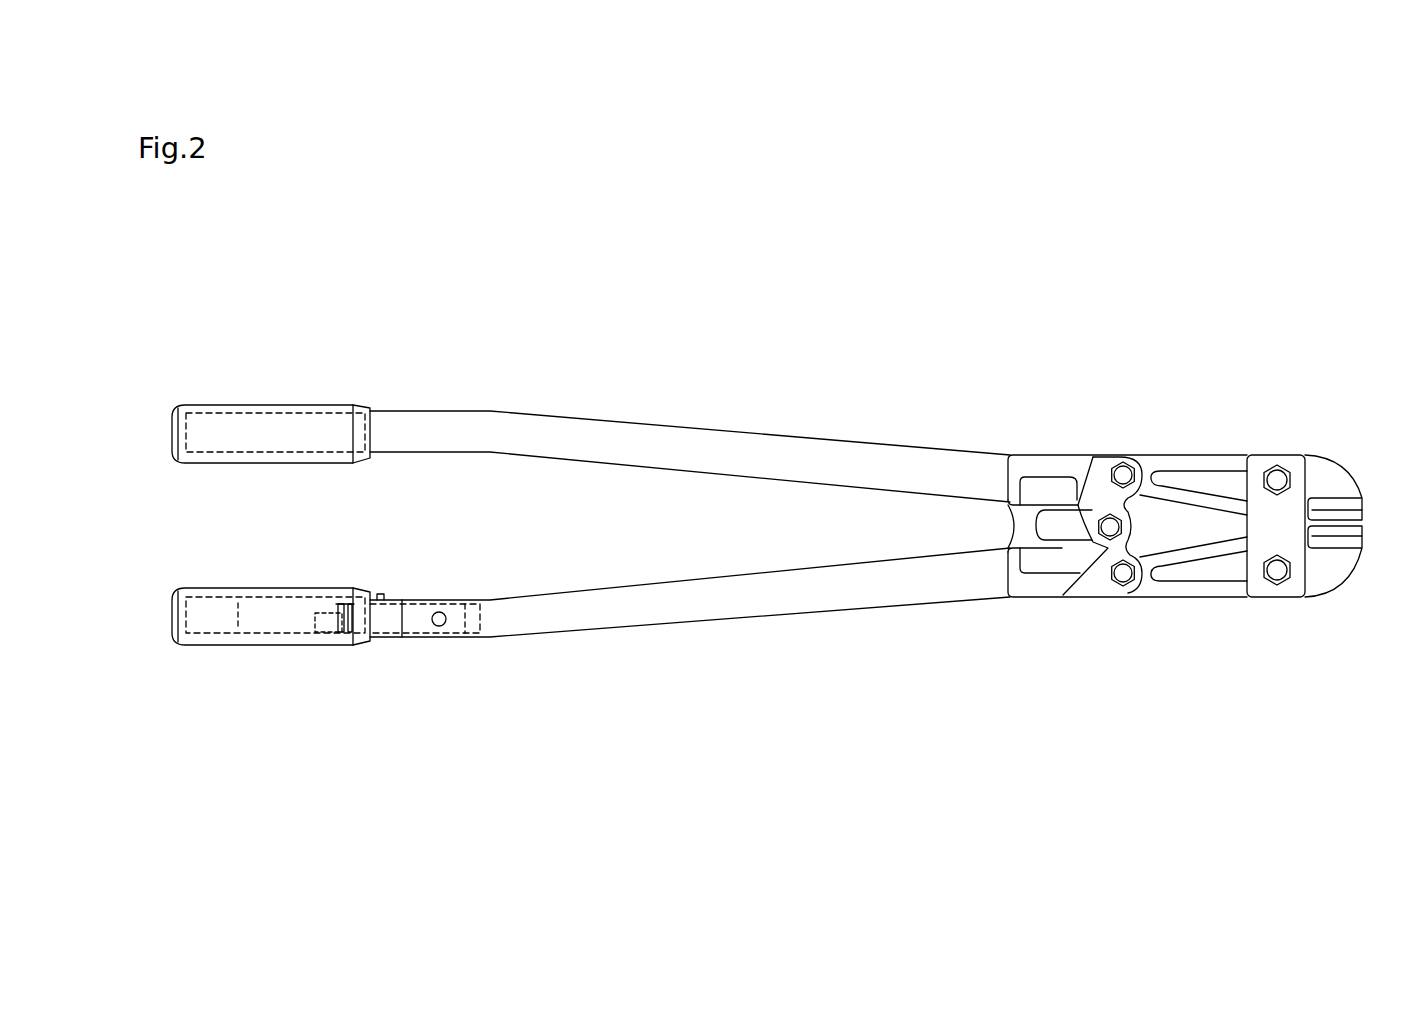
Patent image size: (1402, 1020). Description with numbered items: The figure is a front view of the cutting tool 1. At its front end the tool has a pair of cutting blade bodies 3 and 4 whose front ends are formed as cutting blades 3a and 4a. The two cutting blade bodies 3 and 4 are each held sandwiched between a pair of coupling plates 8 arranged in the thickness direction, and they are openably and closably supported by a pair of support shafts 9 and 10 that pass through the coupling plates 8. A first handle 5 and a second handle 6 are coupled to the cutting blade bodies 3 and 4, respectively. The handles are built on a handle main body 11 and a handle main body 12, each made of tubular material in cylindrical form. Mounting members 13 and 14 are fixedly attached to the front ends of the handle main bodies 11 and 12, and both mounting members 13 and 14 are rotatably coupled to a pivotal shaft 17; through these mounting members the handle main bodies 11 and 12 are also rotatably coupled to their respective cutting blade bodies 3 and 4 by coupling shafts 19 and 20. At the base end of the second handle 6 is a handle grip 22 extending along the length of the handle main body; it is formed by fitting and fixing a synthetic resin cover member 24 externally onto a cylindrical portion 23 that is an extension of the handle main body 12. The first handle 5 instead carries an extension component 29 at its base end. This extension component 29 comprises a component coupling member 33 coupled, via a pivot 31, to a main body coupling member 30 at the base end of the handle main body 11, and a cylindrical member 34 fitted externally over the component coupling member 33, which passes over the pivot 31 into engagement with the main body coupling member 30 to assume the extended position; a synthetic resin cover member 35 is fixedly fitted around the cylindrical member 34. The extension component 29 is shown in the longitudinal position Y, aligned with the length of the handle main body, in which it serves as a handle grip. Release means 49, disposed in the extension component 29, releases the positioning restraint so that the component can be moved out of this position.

The cutting tool 1 is at (832, 365).
The cutting blade body 3 is at (1224, 597).
The cutting blade 3a is at (1338, 545).
The cutting blade body 4 is at (1227, 455).
The cutting blade 4a is at (1338, 518).
The first handle 5 is at (684, 652).
The second handle 6 is at (681, 402).
The coupling plate 8 is at (1292, 510).
The support shaft 9 is at (1278, 580).
The support shaft 10 is at (1278, 470).
The handle main body 11 is at (612, 617).
The handle main body 12 is at (568, 425).
The mounting member 13 is at (1042, 588).
The mounting member 14 is at (1028, 465).
The pivotal shaft 17 is at (1106, 516).
The coupling shaft 19 is at (1122, 586).
The coupling shaft 20 is at (1122, 462).
The handle grip 22 is at (290, 393).
The cylindrical portion 23 is at (333, 407).
The cover member 24 is at (232, 403).
The extension component 29 is at (351, 579).
The main body coupling member 30 is at (385, 638).
The pivot 31 is at (337, 622).
The component coupling member 33 is at (258, 624).
The cylindrical member 34 is at (266, 598).
The cover member 35 is at (207, 646).
The release means 49 is at (382, 587).
The longitudinal position Y is at (212, 576).